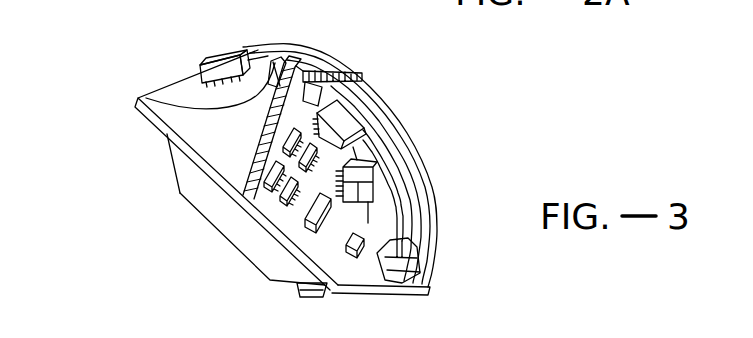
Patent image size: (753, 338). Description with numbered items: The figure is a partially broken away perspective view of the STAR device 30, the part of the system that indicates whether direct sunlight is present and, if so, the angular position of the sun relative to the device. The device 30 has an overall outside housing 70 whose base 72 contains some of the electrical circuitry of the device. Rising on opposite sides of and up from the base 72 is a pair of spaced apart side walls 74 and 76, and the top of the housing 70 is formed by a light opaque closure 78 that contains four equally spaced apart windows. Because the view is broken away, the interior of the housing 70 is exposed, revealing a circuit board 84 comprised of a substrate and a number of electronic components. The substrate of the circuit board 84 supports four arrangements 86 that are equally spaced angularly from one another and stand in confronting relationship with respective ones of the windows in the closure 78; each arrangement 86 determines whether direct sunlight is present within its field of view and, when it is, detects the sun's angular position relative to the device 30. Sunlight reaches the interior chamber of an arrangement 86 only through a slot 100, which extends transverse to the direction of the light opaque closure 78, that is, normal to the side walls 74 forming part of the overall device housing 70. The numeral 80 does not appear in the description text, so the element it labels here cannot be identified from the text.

The device 30 is at (522, 110).
The housing 70 is at (160, 162).
The base 72 is at (207, 214).
The side wall 74 is at (158, 98).
The side wall 76 is at (357, 72).
The light opaque closure 78 is at (303, 57).
The channel 80 is at (384, 166).
The circuit board 84 is at (372, 222).
The arrangement 86 is at (470, 190).
The slot 100 is at (377, 198).